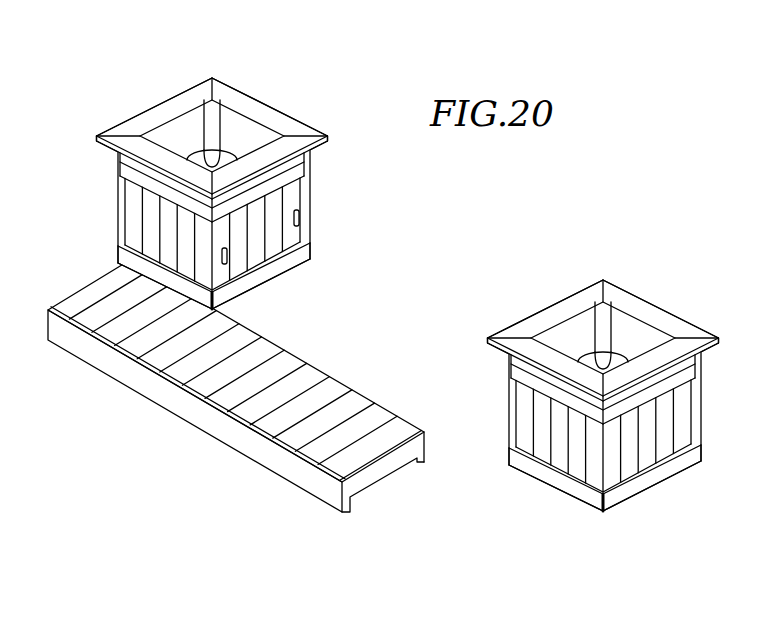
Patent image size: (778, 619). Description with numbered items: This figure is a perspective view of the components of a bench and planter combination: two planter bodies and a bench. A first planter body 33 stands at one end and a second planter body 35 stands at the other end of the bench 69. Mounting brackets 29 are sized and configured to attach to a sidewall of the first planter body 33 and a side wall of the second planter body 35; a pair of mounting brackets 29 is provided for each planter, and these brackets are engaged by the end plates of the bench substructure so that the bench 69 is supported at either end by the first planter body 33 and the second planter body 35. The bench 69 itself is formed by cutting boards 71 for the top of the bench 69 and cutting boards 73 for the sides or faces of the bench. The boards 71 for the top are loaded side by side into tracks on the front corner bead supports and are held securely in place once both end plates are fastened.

The first planter body 33 is at (213, 172).
The mounting brackets 29 is at (228, 257).
The second planter body 35 is at (542, 277).
The bench 69 is at (227, 386).
The boards for the top of the bench 71 is at (352, 407).
The boards for the sides of the bench 73 is at (253, 450).